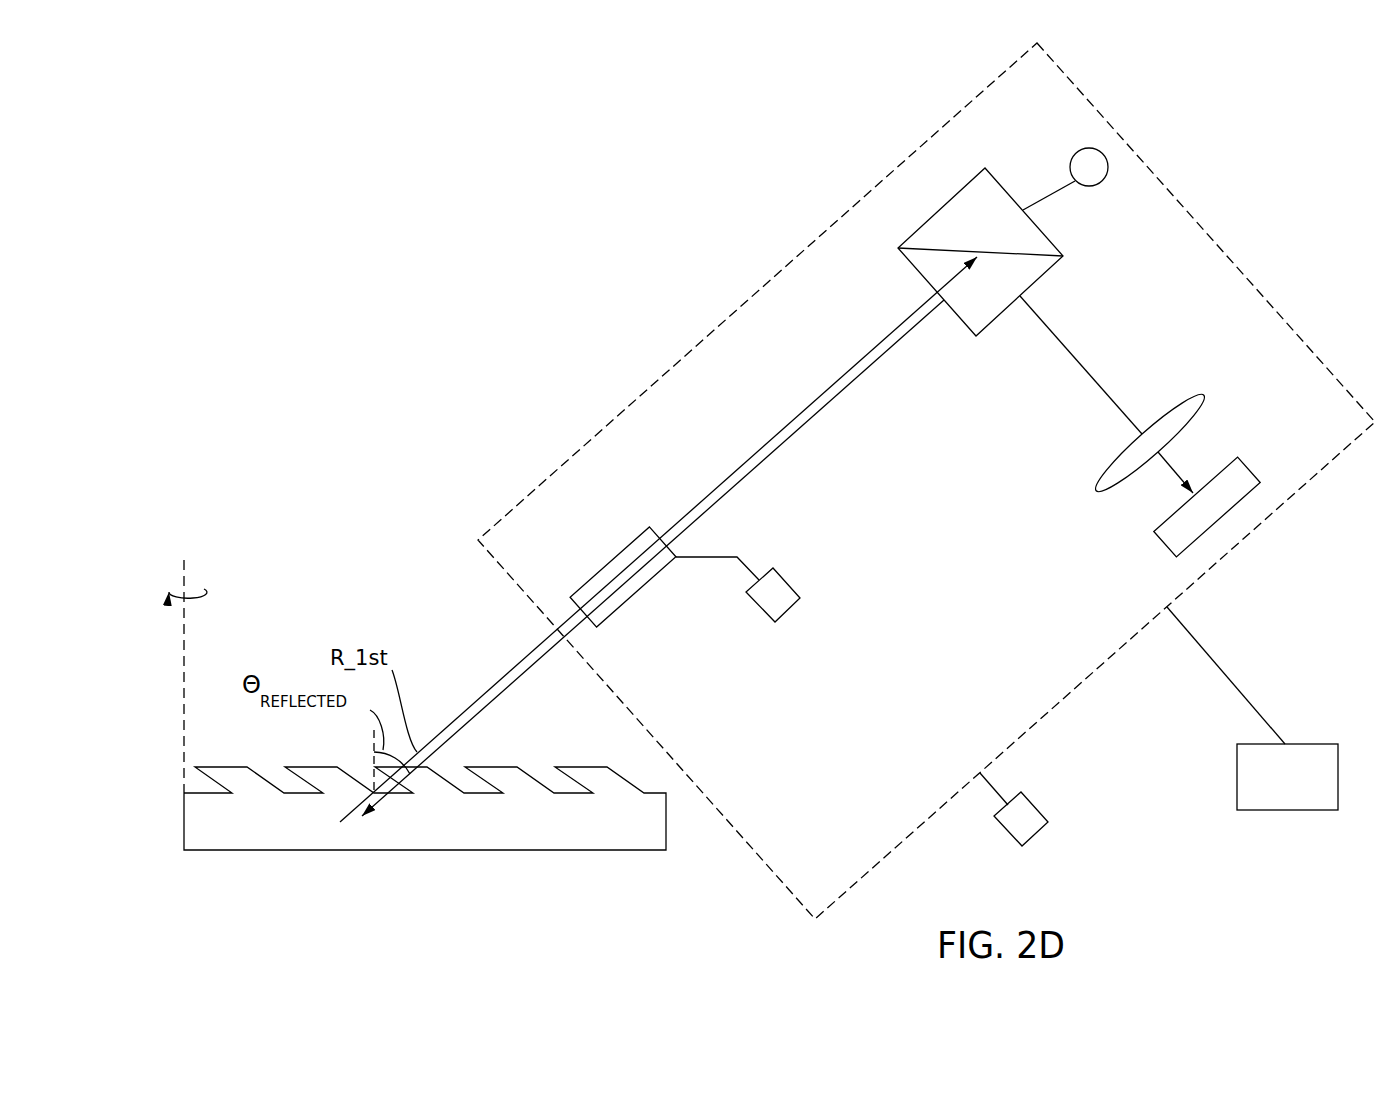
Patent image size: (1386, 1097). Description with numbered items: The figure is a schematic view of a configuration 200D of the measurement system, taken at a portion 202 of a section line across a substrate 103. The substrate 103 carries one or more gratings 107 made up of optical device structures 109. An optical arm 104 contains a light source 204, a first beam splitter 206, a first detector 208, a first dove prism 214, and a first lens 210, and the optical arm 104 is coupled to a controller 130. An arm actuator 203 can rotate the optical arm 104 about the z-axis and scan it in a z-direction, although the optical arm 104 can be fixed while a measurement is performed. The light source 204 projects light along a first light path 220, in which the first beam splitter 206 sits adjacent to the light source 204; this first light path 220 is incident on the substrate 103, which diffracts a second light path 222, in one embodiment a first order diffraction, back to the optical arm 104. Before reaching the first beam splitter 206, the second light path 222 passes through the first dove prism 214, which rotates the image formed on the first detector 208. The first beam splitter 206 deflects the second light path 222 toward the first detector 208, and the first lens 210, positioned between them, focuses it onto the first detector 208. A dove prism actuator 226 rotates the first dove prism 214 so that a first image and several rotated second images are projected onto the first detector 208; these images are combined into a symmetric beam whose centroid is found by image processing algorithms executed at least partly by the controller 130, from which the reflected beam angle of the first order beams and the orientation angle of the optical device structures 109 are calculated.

The configuration 200D is at (1285, 97).
The optical arm 104 is at (1200, 223).
The first beam splitter 206 is at (955, 194).
The light source 204 is at (1108, 166).
The first lens 210 is at (1203, 410).
The first detector 208 is at (1250, 470).
The first light path 220 is at (837, 392).
The second light path 222 is at (531, 654).
The first dove prism 214 is at (634, 536).
The dove prism actuator 226 is at (788, 578).
The arm actuator 203 is at (1033, 800).
The controller 130 is at (1304, 792).
The substrate 103 is at (457, 800).
The grating 107 is at (503, 851).
The optical device structures 109 is at (507, 766).
The portion of a section line 202 is at (208, 860).